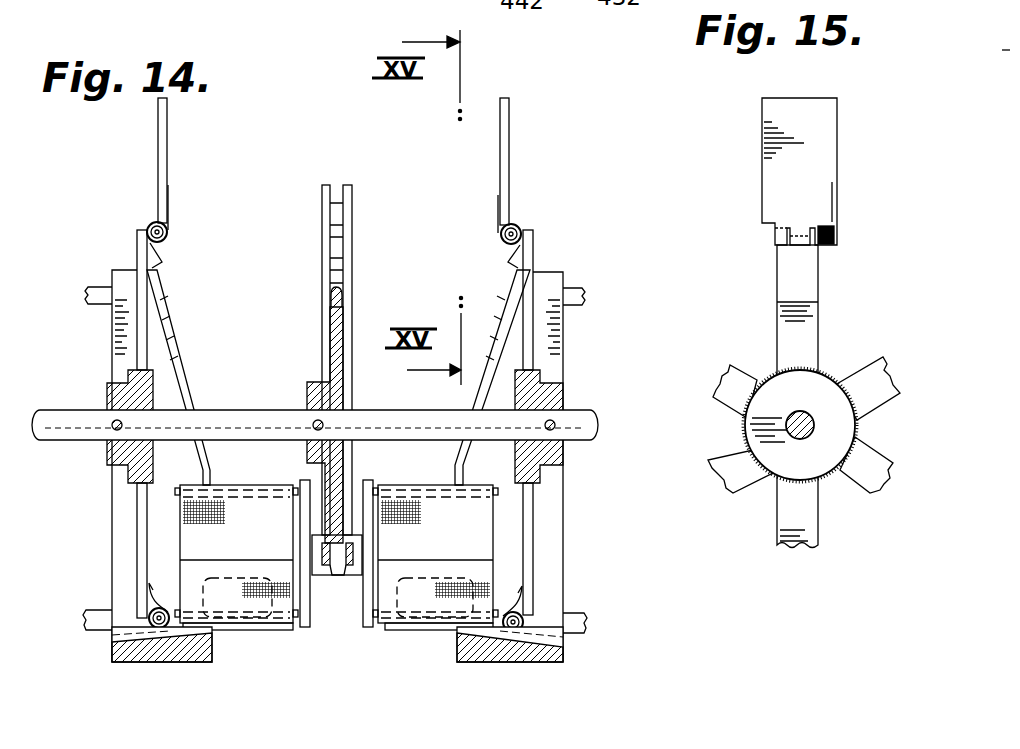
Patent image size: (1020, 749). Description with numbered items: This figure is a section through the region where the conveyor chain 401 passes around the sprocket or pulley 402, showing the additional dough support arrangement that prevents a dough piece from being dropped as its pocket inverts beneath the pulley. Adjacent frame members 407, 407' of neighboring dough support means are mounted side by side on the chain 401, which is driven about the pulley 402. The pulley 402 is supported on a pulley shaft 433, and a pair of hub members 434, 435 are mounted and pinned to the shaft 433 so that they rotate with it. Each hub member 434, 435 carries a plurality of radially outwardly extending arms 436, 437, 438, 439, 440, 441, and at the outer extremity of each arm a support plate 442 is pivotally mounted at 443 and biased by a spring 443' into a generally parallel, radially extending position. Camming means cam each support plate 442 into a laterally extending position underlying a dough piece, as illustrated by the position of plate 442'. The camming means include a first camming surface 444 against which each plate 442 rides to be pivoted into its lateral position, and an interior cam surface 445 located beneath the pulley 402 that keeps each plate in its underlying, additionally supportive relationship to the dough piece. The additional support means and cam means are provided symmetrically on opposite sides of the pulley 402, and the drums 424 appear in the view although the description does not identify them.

In FIG. 14, the chain 401 is at (348, 201).
In FIG. 14, the pulley 402 is at (340, 332).
In FIG. 14, the frame member 407 is at (359, 593).
In FIG. 14, the adjacent frame member 407' is at (295, 583).
In FIG. 14, the drum 424 is at (207, 541).
In FIG. 14, the pulley shaft 433 is at (262, 424).
In FIG. 15, the pulley shaft 433 is at (795, 437).
In FIG. 14, the hub member 434 is at (112, 395).
In FIG. 14, the hub member 435 is at (545, 400).
In FIG. 15, the hub member 435 is at (775, 398).
In FIG. 14, the arm 436 is at (528, 325).
In FIG. 15, the arm 436 is at (797, 283).
In FIG. 15, the arm 437 is at (864, 383).
In FIG. 15, the arm 438 is at (880, 480).
In FIG. 14, the arm 439 is at (528, 570).
In FIG. 15, the arm 439 is at (803, 547).
In FIG. 15, the arm 440 is at (725, 470).
In FIG. 15, the arm 441 is at (736, 395).
In FIG. 14, the support plate 442 is at (320, 161).
In FIG. 15, the support plate 442 is at (839, 164).
In FIG. 14, the support plate in lateral position 442' is at (338, 674).
In FIG. 14, the pivot mounting 443 is at (414, 460).
In FIG. 15, the pivot mounting 443 is at (750, 245).
In FIG. 14, the spring 443' is at (284, 200).
In FIG. 15, the spring 443' is at (860, 213).
In FIG. 14, the first camming surface 444 is at (172, 340).
In FIG. 14, the interior cam surface 445 is at (207, 637).